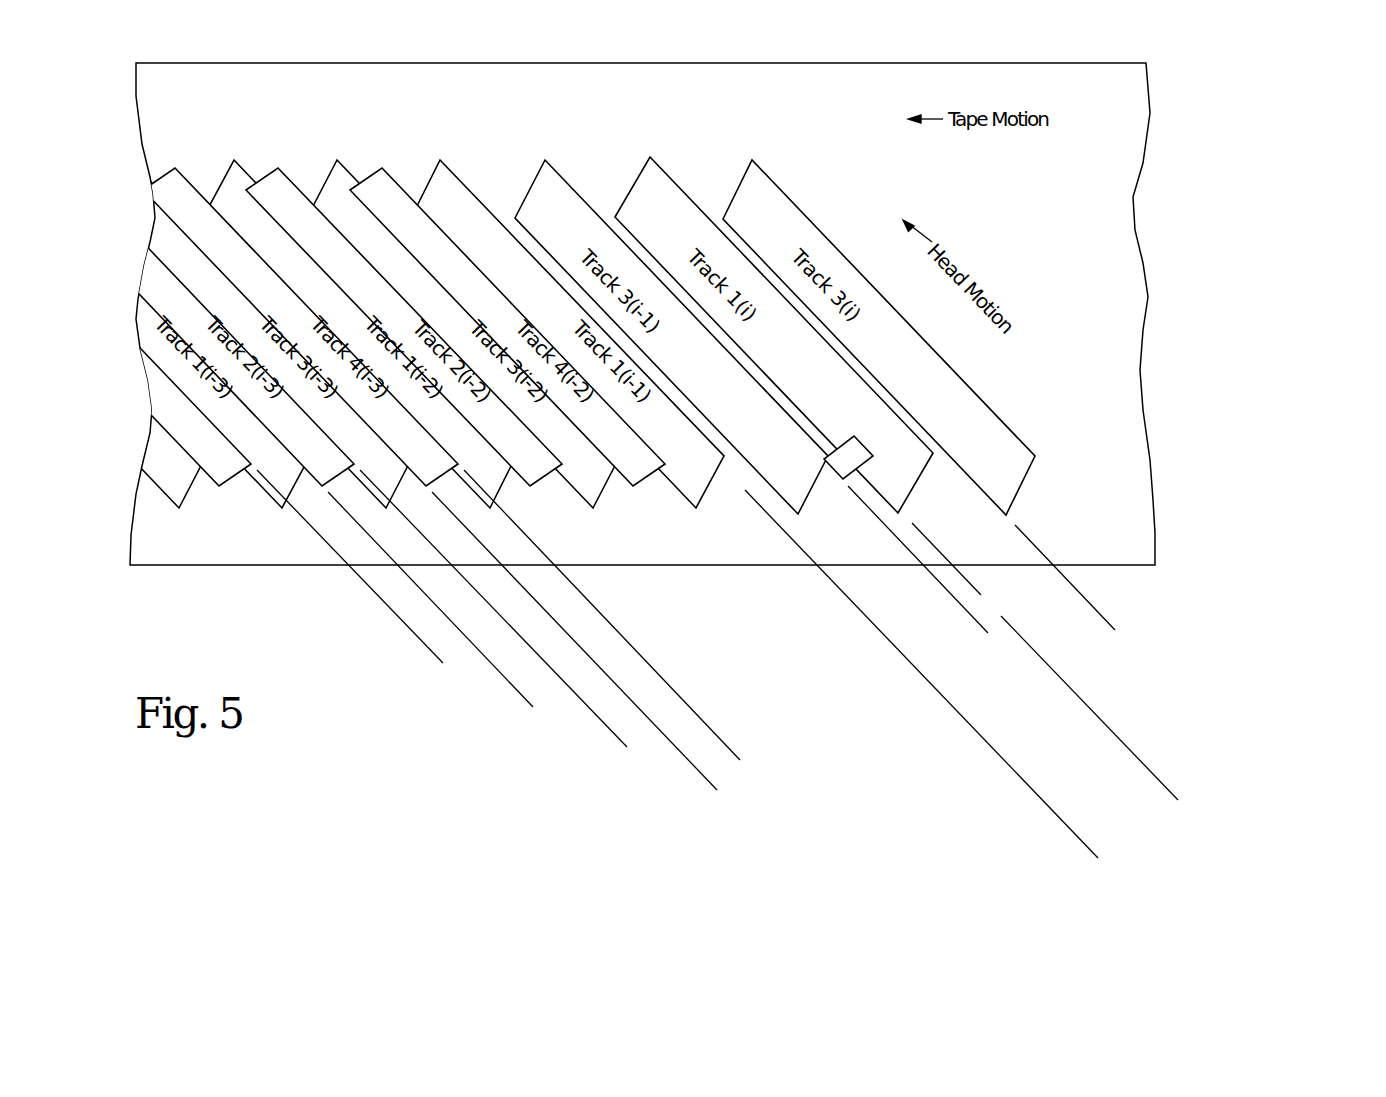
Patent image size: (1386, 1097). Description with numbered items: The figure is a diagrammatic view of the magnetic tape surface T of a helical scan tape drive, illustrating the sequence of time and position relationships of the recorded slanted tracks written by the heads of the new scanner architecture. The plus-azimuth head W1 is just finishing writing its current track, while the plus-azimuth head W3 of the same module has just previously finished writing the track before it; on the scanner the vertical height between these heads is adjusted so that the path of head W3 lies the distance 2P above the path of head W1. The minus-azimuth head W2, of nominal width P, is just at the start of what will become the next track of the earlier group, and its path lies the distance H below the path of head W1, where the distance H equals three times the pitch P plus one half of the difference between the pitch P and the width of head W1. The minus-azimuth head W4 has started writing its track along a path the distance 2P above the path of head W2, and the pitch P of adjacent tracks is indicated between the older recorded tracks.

The magnetic tape surface T is at (792, 63).
The write head W1 is at (623, 220).
The write head W2 is at (743, 486).
The write head W3 is at (673, 168).
The write head W4 is at (811, 457).
The track pitch P is at (511, 635).
The distance 2P is at (1013, 643).
The distance H is at (1210, 735).